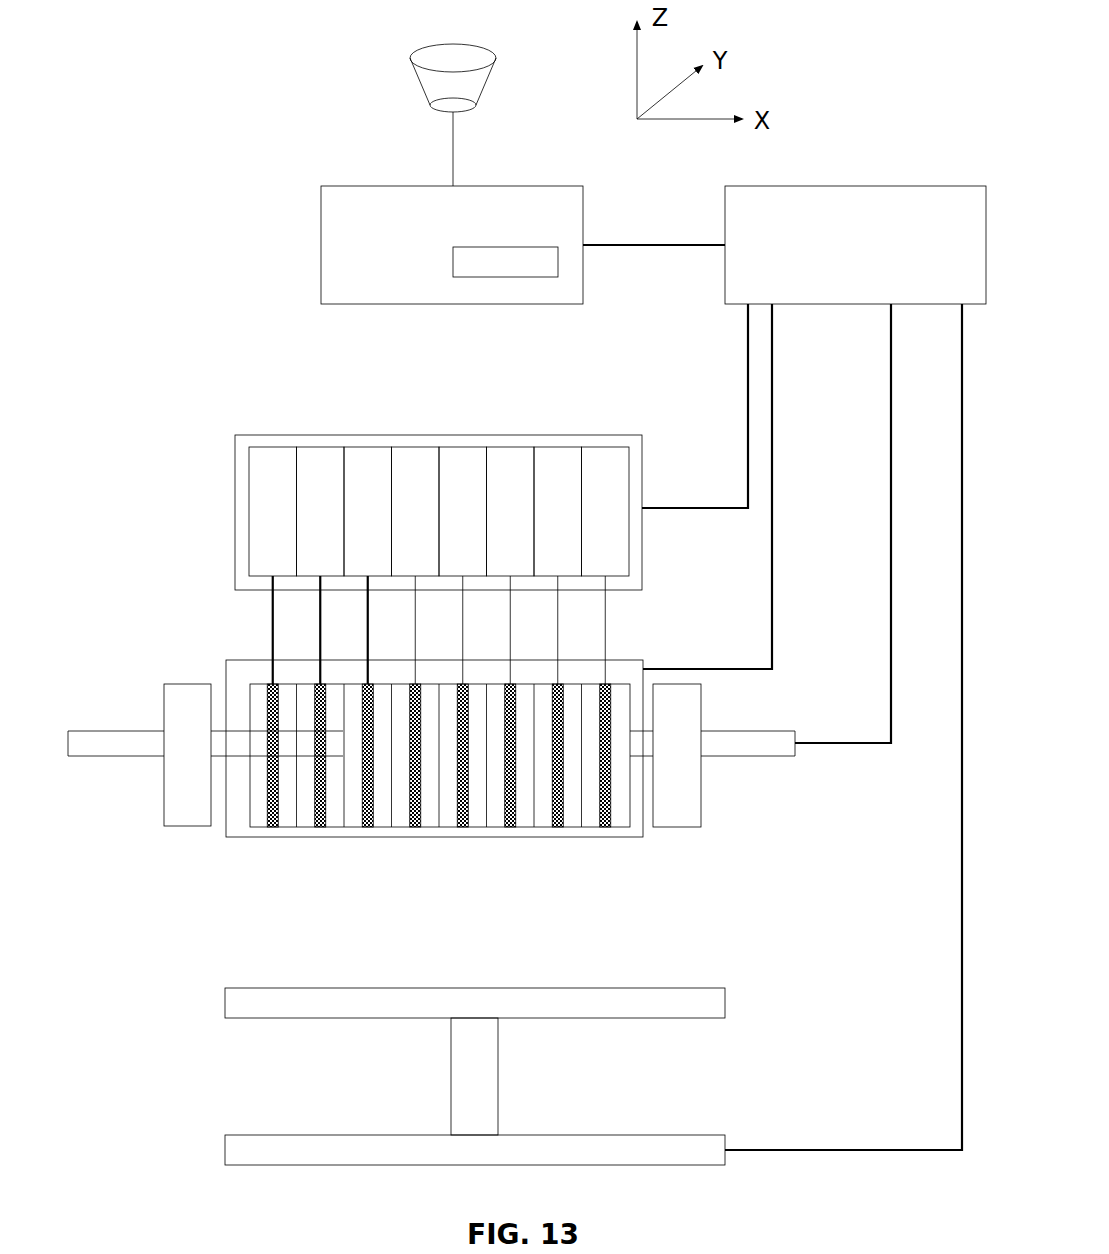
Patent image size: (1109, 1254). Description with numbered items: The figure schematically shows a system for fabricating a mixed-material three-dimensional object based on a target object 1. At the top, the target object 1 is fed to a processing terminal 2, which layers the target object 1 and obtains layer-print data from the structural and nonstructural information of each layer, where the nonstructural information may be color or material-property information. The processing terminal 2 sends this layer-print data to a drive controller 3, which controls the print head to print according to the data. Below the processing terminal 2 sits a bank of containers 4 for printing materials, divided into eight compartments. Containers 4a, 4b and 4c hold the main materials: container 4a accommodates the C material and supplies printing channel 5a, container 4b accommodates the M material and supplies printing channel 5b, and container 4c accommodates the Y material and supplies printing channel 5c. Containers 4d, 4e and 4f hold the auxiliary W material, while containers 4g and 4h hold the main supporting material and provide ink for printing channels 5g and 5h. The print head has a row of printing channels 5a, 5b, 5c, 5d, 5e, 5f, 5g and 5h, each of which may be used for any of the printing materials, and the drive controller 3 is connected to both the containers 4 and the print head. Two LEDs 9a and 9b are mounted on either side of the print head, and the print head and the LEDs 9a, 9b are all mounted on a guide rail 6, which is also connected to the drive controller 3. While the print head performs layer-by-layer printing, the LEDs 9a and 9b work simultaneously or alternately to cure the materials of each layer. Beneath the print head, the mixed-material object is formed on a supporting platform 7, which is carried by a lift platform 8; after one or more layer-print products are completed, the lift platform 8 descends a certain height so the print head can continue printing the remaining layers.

The target object 1 is at (418, 80).
The processing terminal 2 is at (320, 245).
The drive controller 3 is at (855, 185).
The container for printing materials 4 is at (235, 512).
The container for main materials 4a is at (268, 447).
The container for main materials 4b is at (320, 447).
The container for main materials 4c is at (367, 447).
The container for auxiliary materials 4d is at (417, 447).
The container for auxiliary materials 4e is at (463, 447).
The container for auxiliary materials 4f is at (511, 447).
The container for main supporting materials 4g is at (557, 447).
The container for main supporting materials 4h is at (642, 435).
The printing channel 5a is at (273, 827).
The printing channel 5b is at (260, 740).
The printing channel 5c is at (261, 754).
The printing channel 5d is at (272, 768).
The printing channel 5e is at (268, 780).
The printing channel 5f is at (690, 768).
The printing channel 5g is at (692, 747).
The printing channel 5h is at (697, 724).
The guide rail 6 is at (795, 743).
The supporting platform 7 is at (726, 1003).
The lift platform 8 is at (496, 1065).
The LED 9a is at (192, 683).
The LED 9b is at (701, 789).